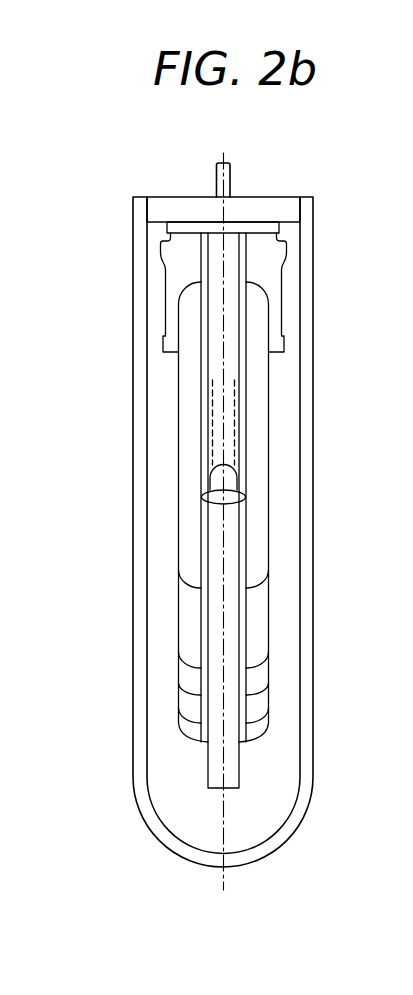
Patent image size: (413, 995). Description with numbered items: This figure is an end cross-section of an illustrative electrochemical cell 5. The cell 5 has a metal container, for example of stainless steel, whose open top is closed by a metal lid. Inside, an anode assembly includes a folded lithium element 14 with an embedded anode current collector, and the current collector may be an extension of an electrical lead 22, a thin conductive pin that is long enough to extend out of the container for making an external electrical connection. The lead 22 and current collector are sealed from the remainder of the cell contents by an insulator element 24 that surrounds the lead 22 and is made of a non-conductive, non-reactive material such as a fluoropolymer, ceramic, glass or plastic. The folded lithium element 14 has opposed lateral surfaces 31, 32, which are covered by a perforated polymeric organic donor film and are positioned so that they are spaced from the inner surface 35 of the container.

The electrochemical cell 5 is at (312, 860).
The folded lithium element 14 is at (242, 735).
The electrical lead 22 is at (232, 188).
The insulator element 24 is at (281, 293).
The opposed lateral surface 31 is at (178, 537).
The opposed lateral surface 32 is at (270, 525).
The inner surface of the container 35 is at (148, 645).